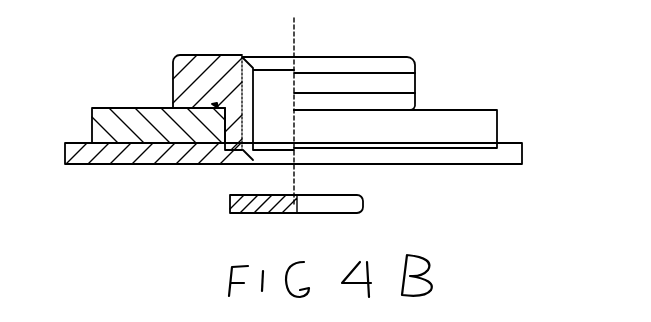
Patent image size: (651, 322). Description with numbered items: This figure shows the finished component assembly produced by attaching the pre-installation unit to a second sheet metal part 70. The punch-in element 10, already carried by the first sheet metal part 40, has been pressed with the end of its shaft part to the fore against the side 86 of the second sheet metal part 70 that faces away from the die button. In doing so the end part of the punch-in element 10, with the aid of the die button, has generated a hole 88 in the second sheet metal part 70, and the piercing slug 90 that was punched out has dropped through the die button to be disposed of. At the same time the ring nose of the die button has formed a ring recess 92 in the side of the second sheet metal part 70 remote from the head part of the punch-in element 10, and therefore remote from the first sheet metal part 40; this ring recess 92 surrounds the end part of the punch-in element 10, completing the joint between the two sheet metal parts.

The punch-in element 10 is at (420, 83).
The first sheet metal part 40 is at (500, 128).
The second sheet metal part 70 is at (489, 157).
The side of the second sheet metal part remote from the die button 86 is at (423, 168).
The hole 88 is at (221, 159).
The ring recess 92 is at (228, 152).
The piercing slug 90 is at (347, 218).